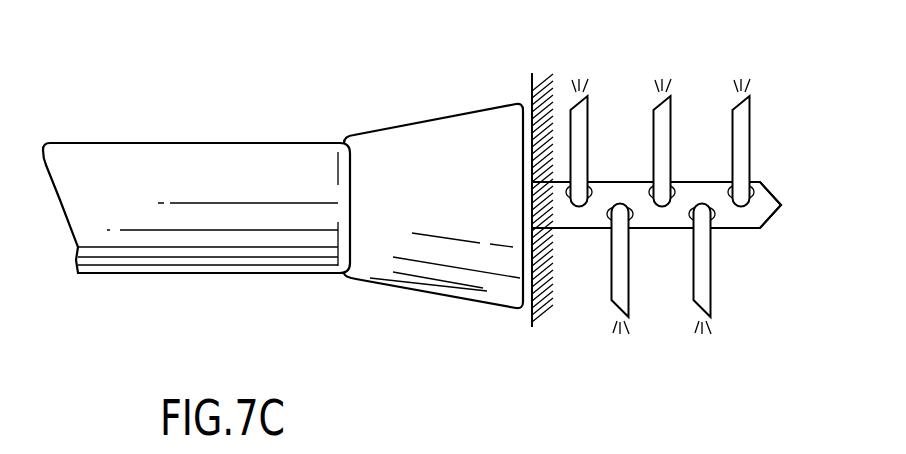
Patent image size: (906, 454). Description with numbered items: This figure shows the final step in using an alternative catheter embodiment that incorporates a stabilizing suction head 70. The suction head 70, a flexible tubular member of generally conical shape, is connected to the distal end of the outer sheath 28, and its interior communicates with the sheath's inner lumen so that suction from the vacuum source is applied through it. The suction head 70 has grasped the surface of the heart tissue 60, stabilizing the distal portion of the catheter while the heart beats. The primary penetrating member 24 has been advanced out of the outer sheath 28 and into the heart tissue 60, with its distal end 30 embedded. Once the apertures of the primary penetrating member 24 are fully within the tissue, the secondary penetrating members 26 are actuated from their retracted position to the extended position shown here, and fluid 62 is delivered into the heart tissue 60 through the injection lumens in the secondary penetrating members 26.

The primary penetrating member 24 is at (752, 229).
The secondary penetrating members 26 is at (750, 143).
The outer sheath 28 is at (187, 274).
The distal end 30 is at (777, 212).
The heart tissue 60 is at (525, 82).
The fluid 62 is at (743, 72).
The suction head 70 is at (417, 290).